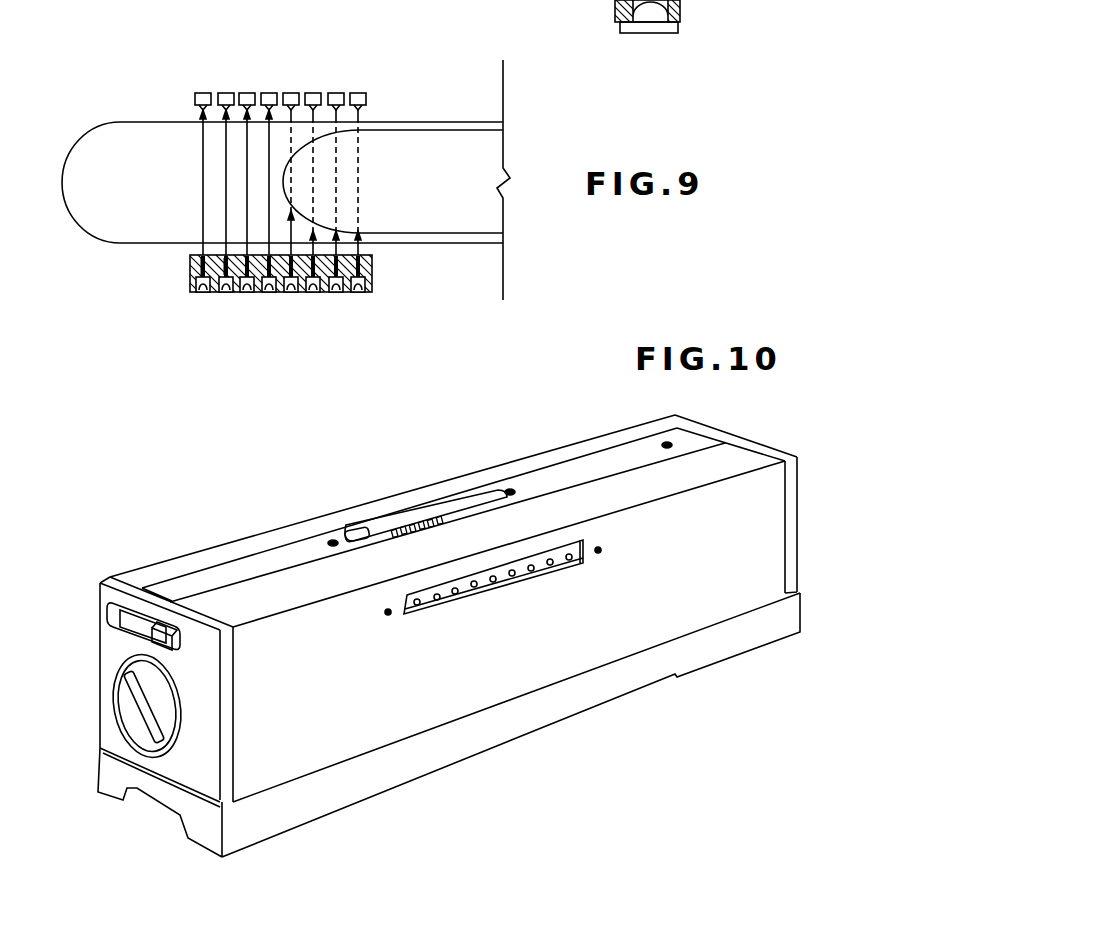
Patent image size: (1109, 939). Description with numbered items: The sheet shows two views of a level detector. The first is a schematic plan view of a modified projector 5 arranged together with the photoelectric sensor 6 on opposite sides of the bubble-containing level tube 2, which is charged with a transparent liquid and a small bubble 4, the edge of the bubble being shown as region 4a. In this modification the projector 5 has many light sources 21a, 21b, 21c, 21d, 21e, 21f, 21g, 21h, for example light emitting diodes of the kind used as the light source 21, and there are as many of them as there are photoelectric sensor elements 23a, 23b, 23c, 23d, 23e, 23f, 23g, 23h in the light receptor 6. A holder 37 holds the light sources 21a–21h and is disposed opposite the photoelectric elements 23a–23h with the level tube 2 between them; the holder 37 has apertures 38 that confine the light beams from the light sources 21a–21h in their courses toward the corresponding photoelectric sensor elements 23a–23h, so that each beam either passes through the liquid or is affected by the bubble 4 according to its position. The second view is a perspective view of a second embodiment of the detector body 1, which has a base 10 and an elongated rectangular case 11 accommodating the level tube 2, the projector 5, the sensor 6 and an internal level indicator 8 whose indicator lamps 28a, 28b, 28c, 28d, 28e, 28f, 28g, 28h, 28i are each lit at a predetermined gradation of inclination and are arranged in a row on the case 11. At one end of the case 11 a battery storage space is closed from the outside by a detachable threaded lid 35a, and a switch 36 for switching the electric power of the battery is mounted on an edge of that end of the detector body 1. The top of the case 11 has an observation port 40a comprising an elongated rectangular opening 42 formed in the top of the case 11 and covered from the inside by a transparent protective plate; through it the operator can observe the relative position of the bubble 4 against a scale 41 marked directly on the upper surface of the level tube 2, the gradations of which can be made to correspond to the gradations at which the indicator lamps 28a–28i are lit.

In FIG. 10, the body 1 is at (205, 540).
In FIG. 9, the bubble-containing level tube 2 is at (122, 121).
In FIG. 9, the bubble 4 is at (480, 157).
In FIG. 9, the leading edge of bill 4a is at (283, 182).
In FIG. 9, the projector 5 is at (178, 297).
In FIG. 9, the photoelectric sensor 6 is at (372, 86).
In FIG. 10, the internal level indicator 8 is at (400, 617).
In FIG. 10, the base 10 is at (690, 650).
In FIG. 10, the elongated rectangular case 11 is at (752, 552).
In FIG. 9, the light source 21 is at (655, 10).
In FIG. 9, the light source 21a is at (203, 293).
In FIG. 9, the light source 21b is at (223, 297).
In FIG. 9, the light source 21c is at (250, 295).
In FIG. 9, the light source 21d is at (270, 295).
In FIG. 9, the light source 21e is at (295, 297).
In FIG. 9, the light source 21f is at (315, 297).
In FIG. 9, the light source 21g is at (338, 298).
In FIG. 9, the light source 21h is at (362, 297).
In FIG. 9, the photoelectric sensor element 23a is at (195, 97).
In FIG. 9, the photoelectric sensor element 23b is at (224, 93).
In FIG. 9, the photoelectric sensor element 23c is at (242, 93).
In FIG. 9, the photoelectric sensor element 23d is at (268, 93).
In FIG. 9, the photoelectric sensor element 23e is at (291, 93).
In FIG. 9, the photoelectric sensor element 23f is at (313, 93).
In FIG. 9, the photoelectric sensor element 23g is at (341, 93).
In FIG. 9, the photoelectric sensor element 23h is at (358, 93).
In FIG. 10, the indicator lamp 28a is at (417, 605).
In FIG. 10, the indicator lamp 28b is at (437, 600).
In FIG. 10, the indicator lamp 28c is at (456, 594).
In FIG. 10, the indicator lamp 28d is at (474, 587).
In FIG. 10, the indicator lamp 28e is at (494, 582).
In FIG. 10, the indicator lamp 28f is at (513, 576).
In FIG. 10, the indicator lamp 28g is at (533, 571).
In FIG. 10, the indicator lamp 28h is at (548, 560).
In FIG. 10, the indicator lamp 28i is at (572, 560).
In FIG. 10, the detachable threaded lid 35a is at (130, 717).
In FIG. 10, the switch 36 is at (153, 633).
In FIG. 9, the holder 37 is at (193, 267).
In FIG. 9, the apertures 38 is at (224, 255).
In FIG. 10, the observation port 40a is at (450, 500).
In FIG. 10, the scale 41 is at (413, 517).
In FIG. 10, the elongated rectangular opening 42 is at (373, 533).